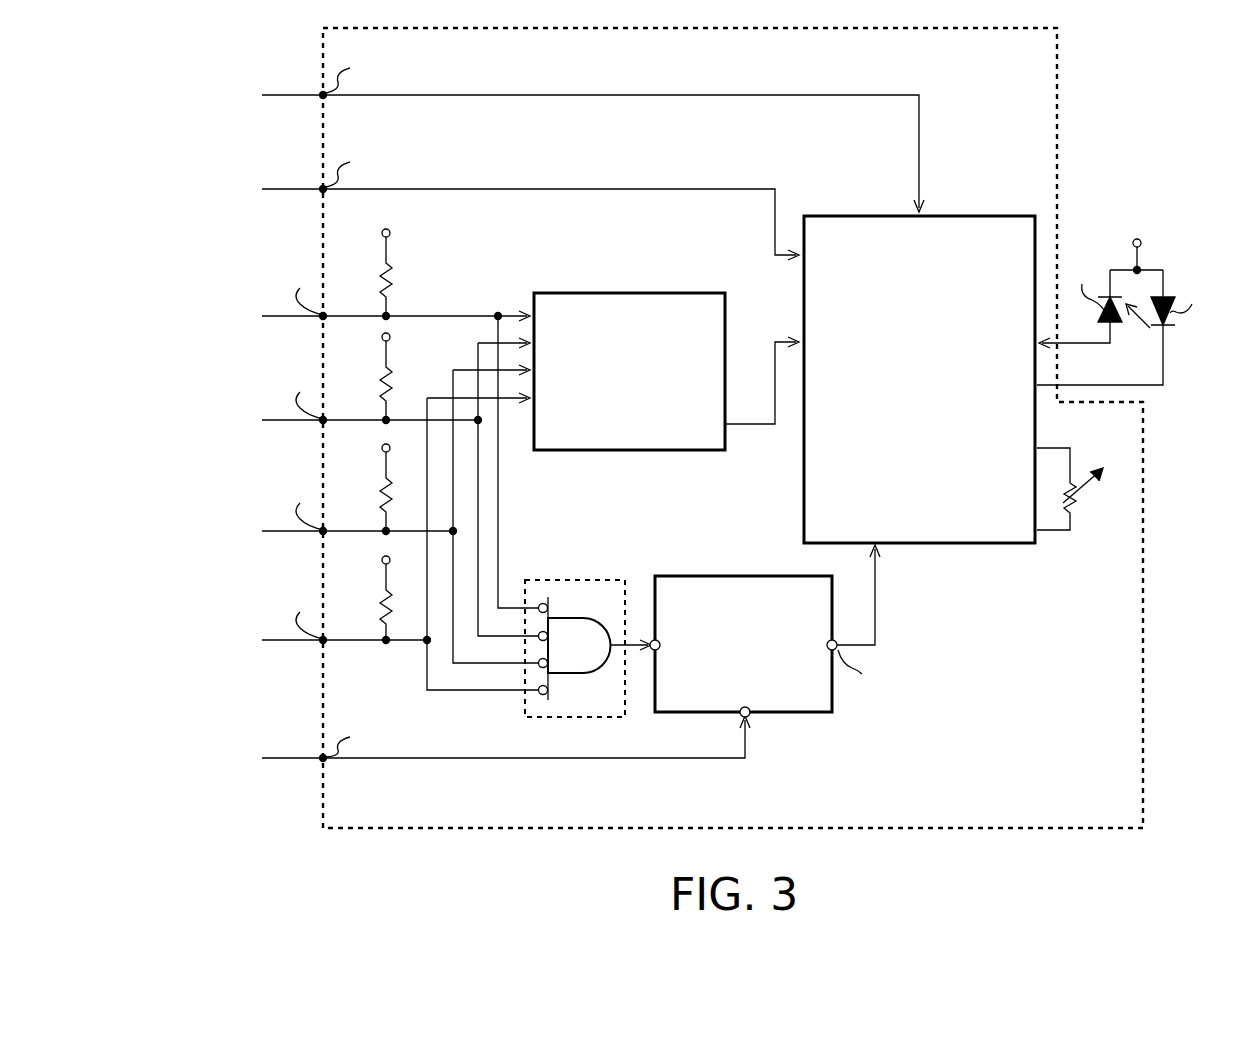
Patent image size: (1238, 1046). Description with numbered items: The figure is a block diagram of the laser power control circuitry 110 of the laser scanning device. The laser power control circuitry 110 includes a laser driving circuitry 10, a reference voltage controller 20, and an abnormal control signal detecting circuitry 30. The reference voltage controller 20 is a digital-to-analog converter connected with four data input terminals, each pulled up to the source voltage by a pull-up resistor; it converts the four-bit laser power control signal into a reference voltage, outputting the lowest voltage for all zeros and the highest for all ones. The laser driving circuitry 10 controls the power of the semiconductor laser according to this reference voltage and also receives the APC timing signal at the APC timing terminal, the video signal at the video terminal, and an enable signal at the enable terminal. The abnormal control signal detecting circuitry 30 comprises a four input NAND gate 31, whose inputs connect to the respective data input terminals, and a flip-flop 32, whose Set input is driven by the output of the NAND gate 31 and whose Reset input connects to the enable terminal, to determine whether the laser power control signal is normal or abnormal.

The laser power control circuitry 110 is at (318, 68).
The laser driving circuitry 10 is at (968, 545).
The reference voltage controller 20 is at (628, 293).
The abnormal control signal detecting circuitry 30 is at (622, 726).
The four input NAND gate 31 is at (526, 716).
The flip-flop 32 is at (706, 575).